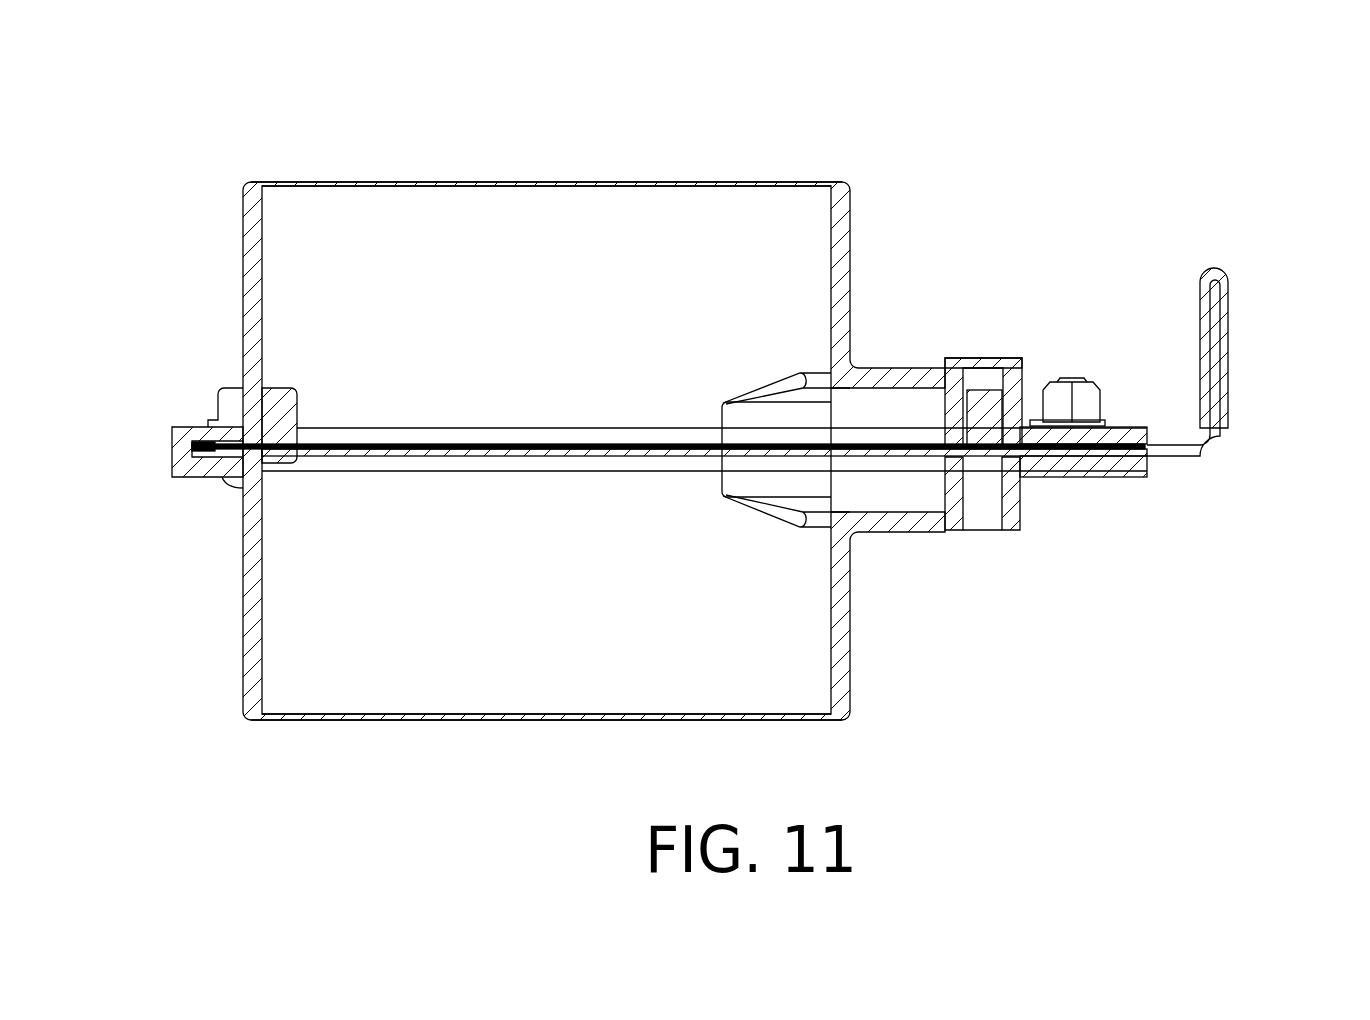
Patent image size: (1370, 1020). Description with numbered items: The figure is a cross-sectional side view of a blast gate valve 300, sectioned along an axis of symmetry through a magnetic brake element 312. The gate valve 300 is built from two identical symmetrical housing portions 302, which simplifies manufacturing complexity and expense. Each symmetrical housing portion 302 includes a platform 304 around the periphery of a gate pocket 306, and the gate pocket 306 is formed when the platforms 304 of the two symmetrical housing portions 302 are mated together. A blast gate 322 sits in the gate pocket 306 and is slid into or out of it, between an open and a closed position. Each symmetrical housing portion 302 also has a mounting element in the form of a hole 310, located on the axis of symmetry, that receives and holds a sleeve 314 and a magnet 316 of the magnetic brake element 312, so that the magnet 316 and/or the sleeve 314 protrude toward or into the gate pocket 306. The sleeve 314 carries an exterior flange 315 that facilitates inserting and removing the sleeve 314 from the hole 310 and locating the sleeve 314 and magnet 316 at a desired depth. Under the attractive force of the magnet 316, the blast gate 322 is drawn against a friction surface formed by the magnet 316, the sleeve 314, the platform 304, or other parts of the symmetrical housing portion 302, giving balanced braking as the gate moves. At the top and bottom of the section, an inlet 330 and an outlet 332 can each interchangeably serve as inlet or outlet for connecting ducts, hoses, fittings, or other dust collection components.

The gate valve 300 is at (1095, 695).
The symmetrical housing portion 302 is at (238, 500).
The platform 304 is at (1147, 477).
The gate pocket 306 is at (530, 465).
The hole 310 is at (992, 550).
The magnetic brake element 312 is at (1047, 356).
The sleeve 314 is at (1000, 358).
The exterior flange 315 is at (950, 352).
The magnet 316 is at (987, 427).
The blast gate 322 is at (385, 452).
The inlet 330 is at (546, 160).
The outlet 332 is at (565, 750).